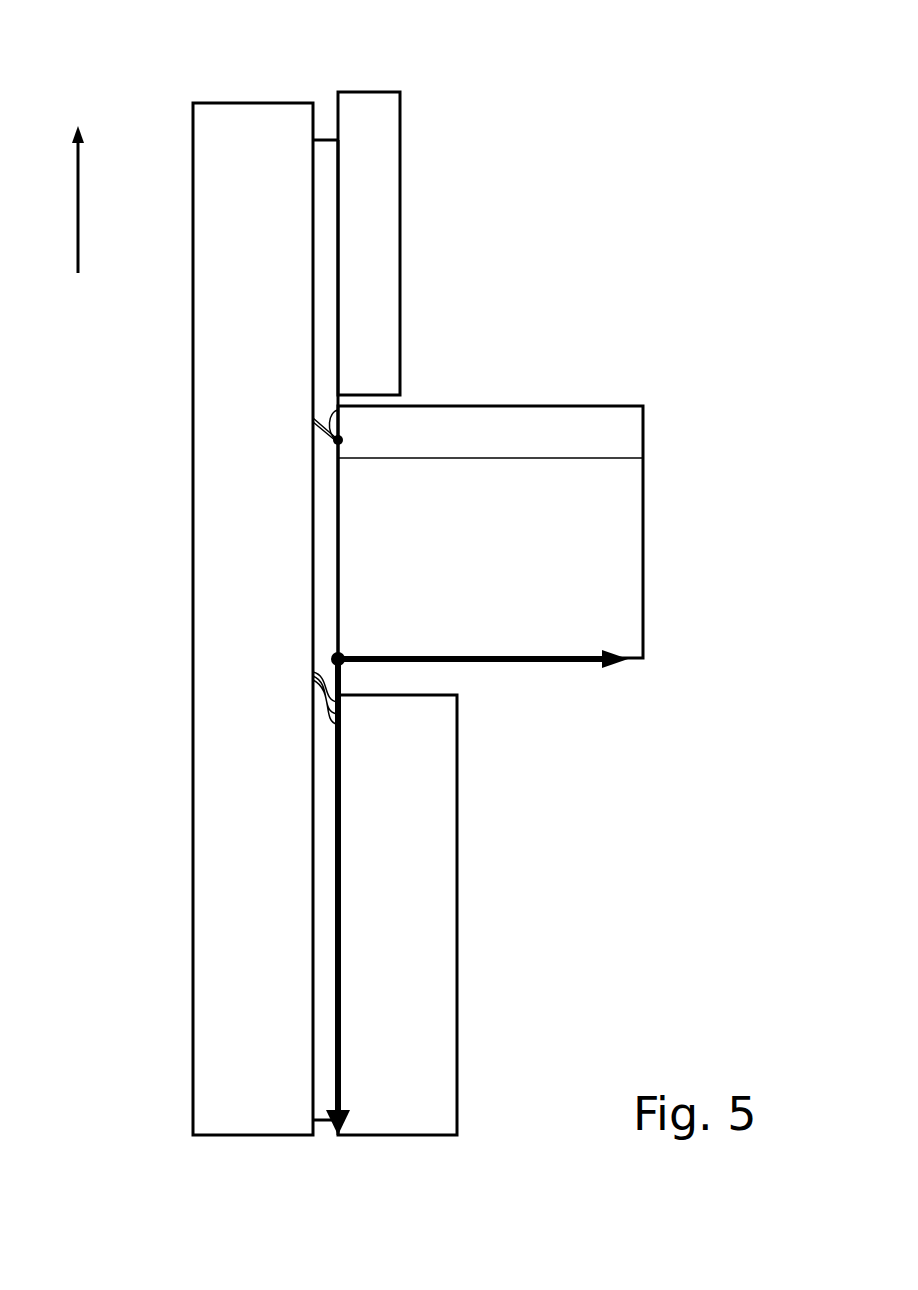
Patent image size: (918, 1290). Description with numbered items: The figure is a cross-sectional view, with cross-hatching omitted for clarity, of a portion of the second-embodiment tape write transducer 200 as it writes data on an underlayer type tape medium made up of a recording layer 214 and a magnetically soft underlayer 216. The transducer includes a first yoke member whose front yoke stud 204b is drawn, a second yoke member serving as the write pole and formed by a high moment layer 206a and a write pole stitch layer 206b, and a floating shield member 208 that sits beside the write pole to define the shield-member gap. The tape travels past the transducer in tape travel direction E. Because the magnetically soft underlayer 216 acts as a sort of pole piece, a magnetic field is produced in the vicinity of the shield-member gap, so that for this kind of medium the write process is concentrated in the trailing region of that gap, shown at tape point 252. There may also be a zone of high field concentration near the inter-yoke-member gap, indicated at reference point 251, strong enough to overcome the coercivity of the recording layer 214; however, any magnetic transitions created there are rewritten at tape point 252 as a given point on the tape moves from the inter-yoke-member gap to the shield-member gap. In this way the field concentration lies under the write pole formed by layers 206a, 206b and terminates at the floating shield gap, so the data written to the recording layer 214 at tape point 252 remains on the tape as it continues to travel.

The tape write transducer 200 is at (632, 35).
The front yoke stud 204b is at (458, 840).
The high moment layer 206a is at (593, 405).
The write pole stitch layer 206b is at (643, 512).
The floating shield member 208 is at (401, 152).
The recording layer 214 is at (313, 885).
The magnetically soft underlayer 216 is at (192, 1020).
The inter-yoke-member gap region 251 is at (294, 679).
The tape point at shield-member gap 252 is at (294, 439).